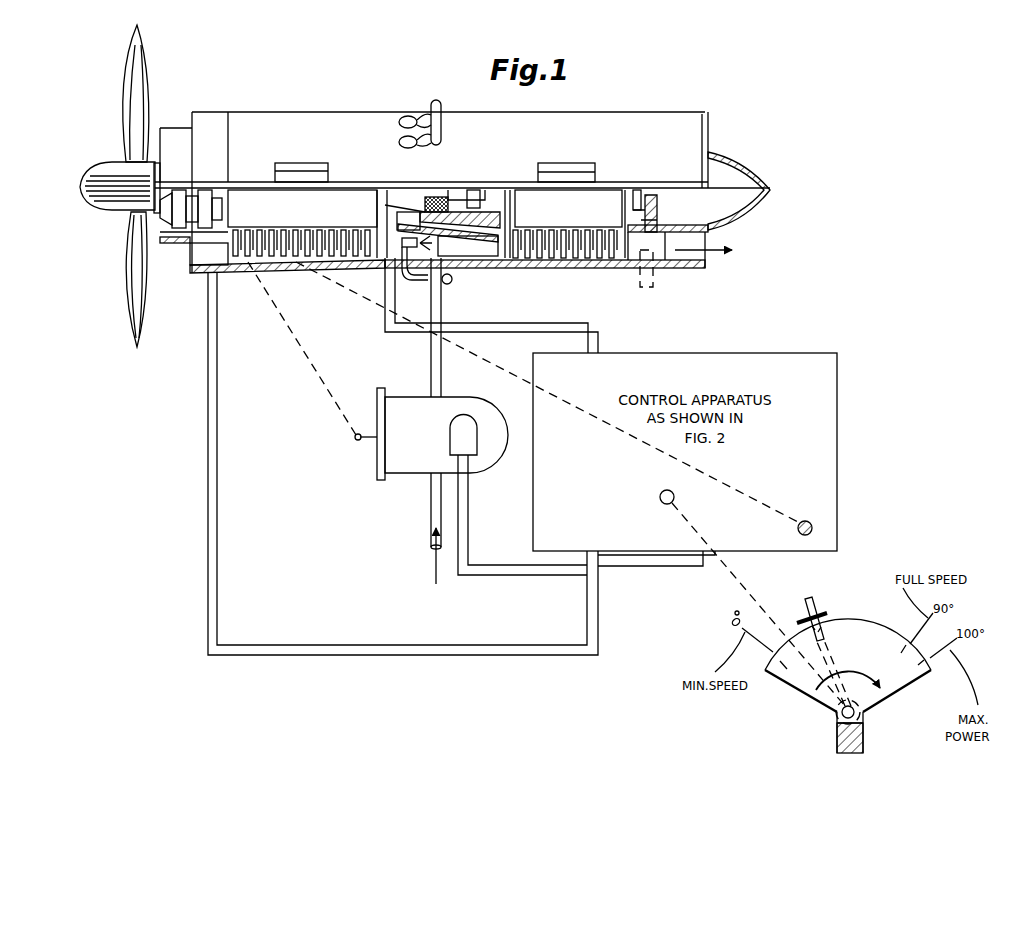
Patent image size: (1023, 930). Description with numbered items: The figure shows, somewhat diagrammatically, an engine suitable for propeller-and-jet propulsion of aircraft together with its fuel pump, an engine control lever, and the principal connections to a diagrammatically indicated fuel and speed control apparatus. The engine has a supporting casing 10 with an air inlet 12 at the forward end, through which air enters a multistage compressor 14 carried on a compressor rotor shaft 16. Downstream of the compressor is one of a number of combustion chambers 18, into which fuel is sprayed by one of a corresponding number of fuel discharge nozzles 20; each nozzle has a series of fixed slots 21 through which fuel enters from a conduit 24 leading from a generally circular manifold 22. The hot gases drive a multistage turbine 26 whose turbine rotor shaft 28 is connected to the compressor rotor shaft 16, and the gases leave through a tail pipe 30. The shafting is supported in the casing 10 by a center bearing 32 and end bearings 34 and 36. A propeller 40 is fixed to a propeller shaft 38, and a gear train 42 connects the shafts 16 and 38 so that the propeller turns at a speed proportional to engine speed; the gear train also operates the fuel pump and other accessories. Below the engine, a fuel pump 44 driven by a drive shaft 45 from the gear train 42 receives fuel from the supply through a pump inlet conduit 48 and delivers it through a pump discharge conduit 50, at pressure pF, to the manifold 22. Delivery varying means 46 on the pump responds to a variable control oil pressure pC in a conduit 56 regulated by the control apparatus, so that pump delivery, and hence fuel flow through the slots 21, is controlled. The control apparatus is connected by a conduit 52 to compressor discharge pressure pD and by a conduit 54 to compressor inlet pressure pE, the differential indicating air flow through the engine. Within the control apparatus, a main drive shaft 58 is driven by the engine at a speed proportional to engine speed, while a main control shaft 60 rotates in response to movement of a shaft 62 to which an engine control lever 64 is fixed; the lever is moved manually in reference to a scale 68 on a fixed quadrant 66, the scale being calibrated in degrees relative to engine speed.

The supporting casing 10 is at (596, 139).
The air inlet 12 is at (175, 250).
The multistage compressor 14 is at (286, 262).
The compressor rotor shaft 16 is at (306, 222).
The combustion chamber 18 is at (470, 255).
The fuel discharge nozzle 20 is at (429, 290).
The fixed slot 21 is at (405, 217).
The manifold 22 is at (441, 110).
The conduit 24 is at (408, 282).
The multistage turbine 26 is at (573, 268).
The turbine rotor shaft 28 is at (576, 222).
The tail pipe 30 is at (700, 257).
The center bearing 32 is at (440, 197).
The end bearing 34 is at (216, 200).
The end bearing 36 is at (638, 192).
The propeller shaft 38 is at (157, 160).
The propeller 40 is at (95, 232).
The gear train 42 is at (198, 190).
The fuel pump 44 is at (417, 463).
The drive shaft 45 is at (354, 437).
The delivery varying means 46 is at (473, 451).
The pump inlet conduit 48 is at (431, 500).
The pump discharge conduit 50 is at (443, 299).
The conduit 52 is at (386, 310).
The conduit 54 is at (213, 345).
The conduit 56 is at (469, 512).
The main drive shaft 58 is at (806, 520).
The main control shaft 60 is at (660, 497).
The shaft 62 is at (864, 713).
The engine control lever 64 is at (810, 598).
The fixed quadrant 66 is at (928, 676).
The scale 68 is at (852, 623).